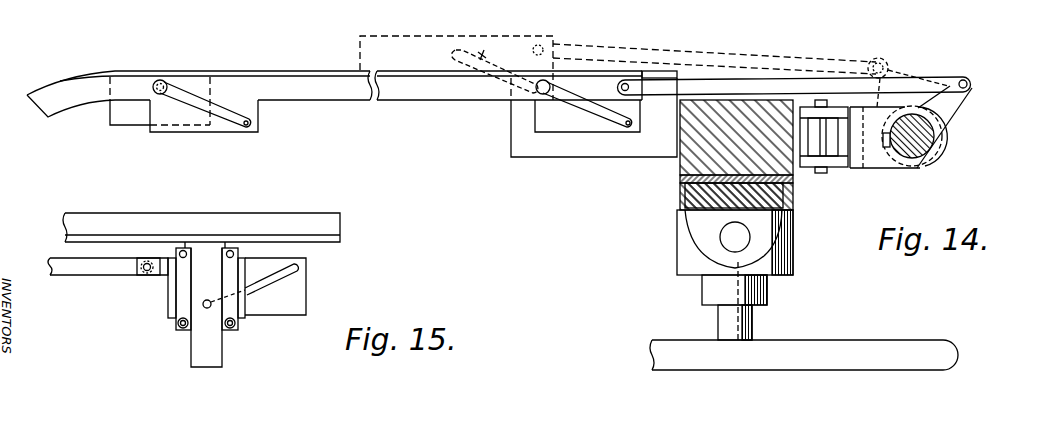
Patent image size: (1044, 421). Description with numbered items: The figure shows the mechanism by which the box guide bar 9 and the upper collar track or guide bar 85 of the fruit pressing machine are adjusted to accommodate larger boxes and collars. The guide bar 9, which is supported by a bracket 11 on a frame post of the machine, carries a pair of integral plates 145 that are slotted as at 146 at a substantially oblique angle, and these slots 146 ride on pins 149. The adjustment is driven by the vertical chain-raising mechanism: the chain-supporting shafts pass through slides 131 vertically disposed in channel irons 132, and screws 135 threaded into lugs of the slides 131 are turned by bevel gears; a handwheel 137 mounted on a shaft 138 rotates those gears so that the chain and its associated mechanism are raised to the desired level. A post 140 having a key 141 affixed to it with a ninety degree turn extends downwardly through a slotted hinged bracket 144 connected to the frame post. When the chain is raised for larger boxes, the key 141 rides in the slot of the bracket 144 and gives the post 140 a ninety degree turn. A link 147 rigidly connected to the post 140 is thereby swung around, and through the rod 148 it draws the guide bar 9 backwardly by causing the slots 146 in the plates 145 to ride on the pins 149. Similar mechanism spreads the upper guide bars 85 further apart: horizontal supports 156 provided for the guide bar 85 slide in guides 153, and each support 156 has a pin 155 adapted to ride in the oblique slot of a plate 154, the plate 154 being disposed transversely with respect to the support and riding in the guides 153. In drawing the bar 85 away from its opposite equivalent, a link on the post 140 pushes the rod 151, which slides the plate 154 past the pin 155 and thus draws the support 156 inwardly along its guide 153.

In FIG. 14, the guide bar 9 is at (291, 71).
In FIG. 14, the bracket 11 is at (637, 152).
In FIG. 15, the track 85 is at (313, 215).
In FIG. 14, the slide 131 is at (690, 193).
In FIG. 14, the channel iron 132 is at (797, 196).
In FIG. 14, the screw 135 is at (725, 230).
In FIG. 14, the handwheel 137 is at (876, 340).
In FIG. 14, the shaft 138 is at (752, 323).
In FIG. 14, the post 140 is at (918, 145).
In FIG. 14, the key 141 is at (897, 150).
In FIG. 14, the slotted hinged bracket 144 is at (872, 160).
In FIG. 14, the plate 145 is at (216, 130).
In FIG. 14, the slot 146 is at (256, 123).
In FIG. 14, the link 147 is at (958, 112).
In FIG. 14, the rod 148 is at (730, 62).
In FIG. 14, the pin 149 is at (161, 80).
In FIG. 15, the rod 151 is at (108, 274).
In FIG. 15, the guide 153 is at (232, 265).
In FIG. 15, the plate 154 is at (298, 296).
In FIG. 15, the pin 155 is at (206, 310).
In FIG. 15, the horizontal support 156 is at (222, 357).